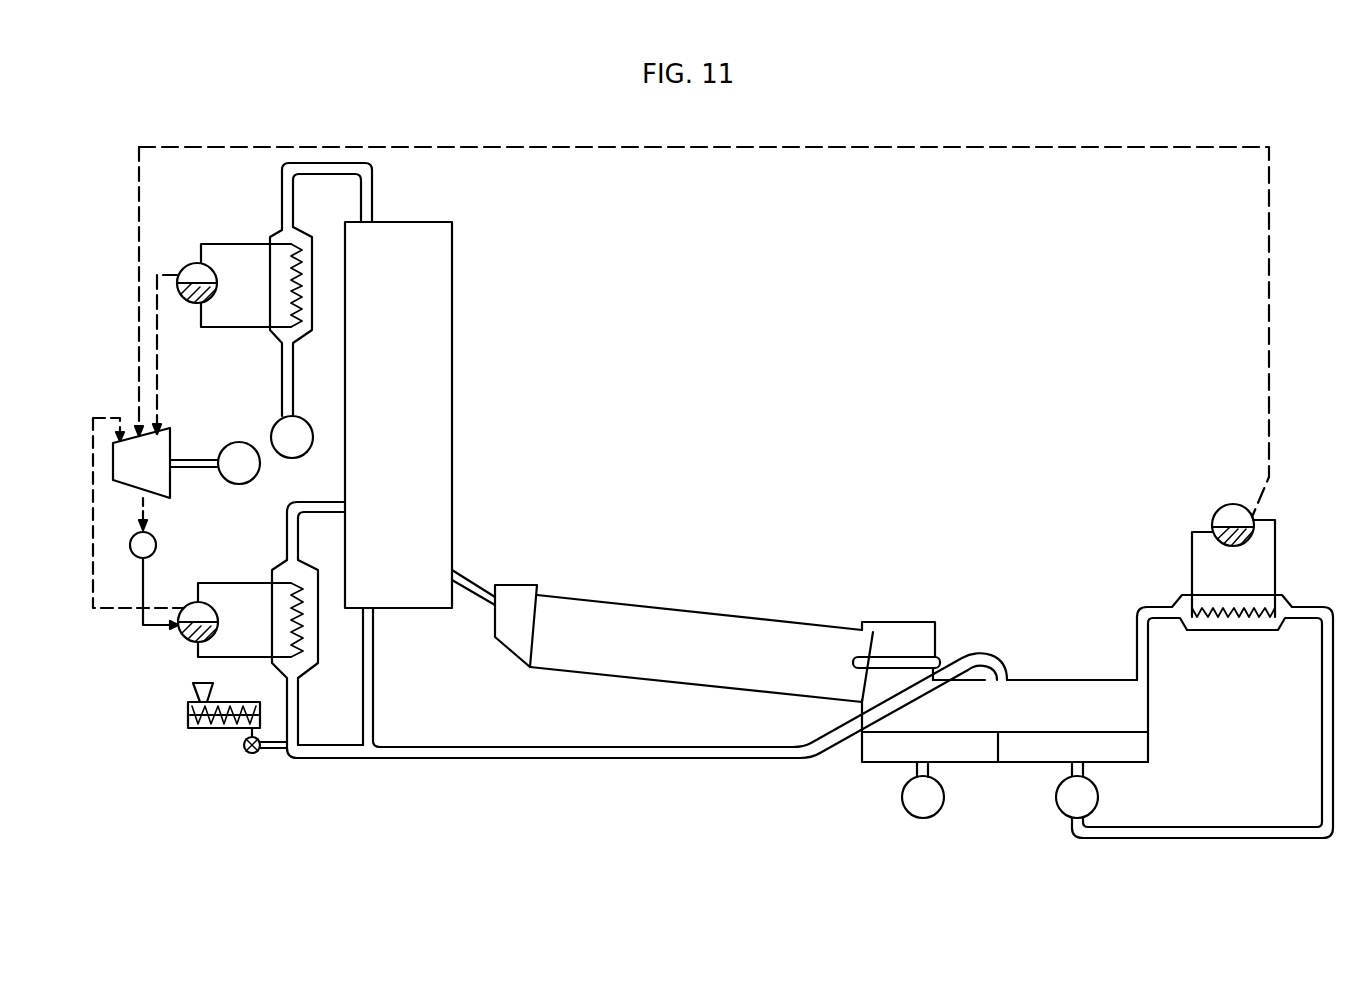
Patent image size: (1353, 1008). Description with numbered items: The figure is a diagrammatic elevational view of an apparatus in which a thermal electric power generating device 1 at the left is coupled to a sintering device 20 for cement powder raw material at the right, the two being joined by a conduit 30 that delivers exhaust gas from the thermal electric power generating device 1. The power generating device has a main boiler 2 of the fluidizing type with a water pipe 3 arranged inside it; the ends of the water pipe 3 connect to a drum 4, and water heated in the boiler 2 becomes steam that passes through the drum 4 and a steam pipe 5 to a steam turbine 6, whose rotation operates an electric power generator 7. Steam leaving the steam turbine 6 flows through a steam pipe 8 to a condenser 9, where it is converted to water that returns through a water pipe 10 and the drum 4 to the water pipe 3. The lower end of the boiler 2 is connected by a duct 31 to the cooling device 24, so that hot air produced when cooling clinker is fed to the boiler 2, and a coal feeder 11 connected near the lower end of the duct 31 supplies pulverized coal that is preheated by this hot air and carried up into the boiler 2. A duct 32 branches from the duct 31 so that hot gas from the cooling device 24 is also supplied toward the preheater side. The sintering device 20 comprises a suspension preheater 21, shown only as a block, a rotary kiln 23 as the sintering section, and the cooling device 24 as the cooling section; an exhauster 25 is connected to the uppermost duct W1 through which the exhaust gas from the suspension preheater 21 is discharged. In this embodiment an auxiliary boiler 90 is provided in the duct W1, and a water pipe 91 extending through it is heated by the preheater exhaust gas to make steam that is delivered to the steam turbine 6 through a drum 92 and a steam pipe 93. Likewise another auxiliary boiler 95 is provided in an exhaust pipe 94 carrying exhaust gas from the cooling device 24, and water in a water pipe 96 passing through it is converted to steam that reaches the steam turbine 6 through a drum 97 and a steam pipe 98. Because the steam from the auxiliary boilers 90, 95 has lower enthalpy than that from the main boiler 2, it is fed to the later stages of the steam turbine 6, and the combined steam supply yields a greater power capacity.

The thermal electric power generating device 1 is at (158, 738).
The boiler 2 is at (310, 665).
The water pipe 3 is at (280, 663).
The drum 4 is at (220, 618).
The steam pipe 5 is at (93, 610).
The steam turbine 6 is at (160, 492).
The electric power generator 7 is at (239, 484).
The steam pipe 8 is at (141, 511).
The condenser 9 is at (153, 552).
The water pipe 10 is at (140, 628).
The coal feeder 11 is at (220, 730).
The sintering device 20 is at (834, 586).
The suspension preheater 21 is at (466, 308).
The rotary kiln 23 is at (713, 616).
The cooling device 24 is at (1043, 686).
The exhauster 25 is at (283, 422).
The conduit 30 is at (287, 522).
The duct 31 is at (628, 759).
The duct 32 is at (374, 678).
The auxiliary boiler 90 is at (272, 234).
The water pipe 91 is at (236, 328).
The drum 92 is at (218, 280).
The steam pipe 93 is at (157, 370).
The exhaust pipe 94 is at (1207, 839).
The auxiliary boiler 95 is at (1237, 632).
The water pipe 96 is at (1276, 566).
The drum 97 is at (1222, 508).
The steam pipe 98 is at (1269, 290).
The duct W1 is at (372, 190).